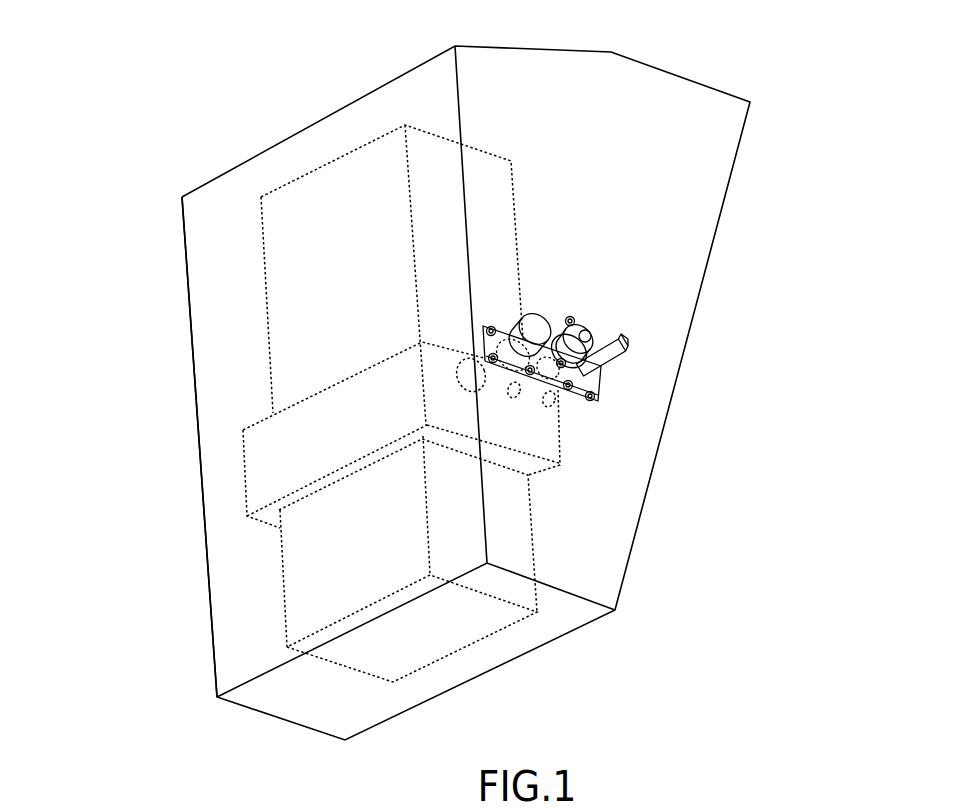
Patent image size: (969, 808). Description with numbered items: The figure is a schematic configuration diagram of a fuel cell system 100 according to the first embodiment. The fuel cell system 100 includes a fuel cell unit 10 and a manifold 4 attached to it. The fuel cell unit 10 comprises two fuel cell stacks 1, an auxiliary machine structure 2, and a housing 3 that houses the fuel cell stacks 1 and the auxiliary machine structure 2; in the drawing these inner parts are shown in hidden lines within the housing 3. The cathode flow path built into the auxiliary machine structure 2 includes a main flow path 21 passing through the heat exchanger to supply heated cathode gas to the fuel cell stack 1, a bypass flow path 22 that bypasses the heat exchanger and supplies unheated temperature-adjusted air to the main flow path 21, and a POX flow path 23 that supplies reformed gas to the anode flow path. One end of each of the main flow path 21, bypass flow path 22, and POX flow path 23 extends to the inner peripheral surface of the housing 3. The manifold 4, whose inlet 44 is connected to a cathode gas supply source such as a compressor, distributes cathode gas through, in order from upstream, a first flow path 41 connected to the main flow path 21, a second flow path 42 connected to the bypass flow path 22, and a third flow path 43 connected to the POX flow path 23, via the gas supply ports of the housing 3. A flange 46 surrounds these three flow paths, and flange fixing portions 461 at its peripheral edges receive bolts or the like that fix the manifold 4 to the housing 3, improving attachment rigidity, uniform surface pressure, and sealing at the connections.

The fuel cell system 100 is at (735, 57).
The fuel cell unit 10 is at (92, 225).
The fuel cell stack 1 is at (267, 312).
The auxiliary machine structure 2 is at (245, 481).
The housing 3 is at (200, 425).
The main flow path 21 is at (483, 379).
The bypass flow path 22 is at (520, 393).
The POX flow path 23 is at (555, 398).
The manifold 4 is at (650, 343).
The first flow path 41 is at (556, 404).
The second flow path 42 is at (590, 404).
The third flow path 43 is at (597, 402).
The inlet 44 is at (570, 322).
The flange 46 is at (600, 385).
The flange fixing portion 461 is at (515, 317).